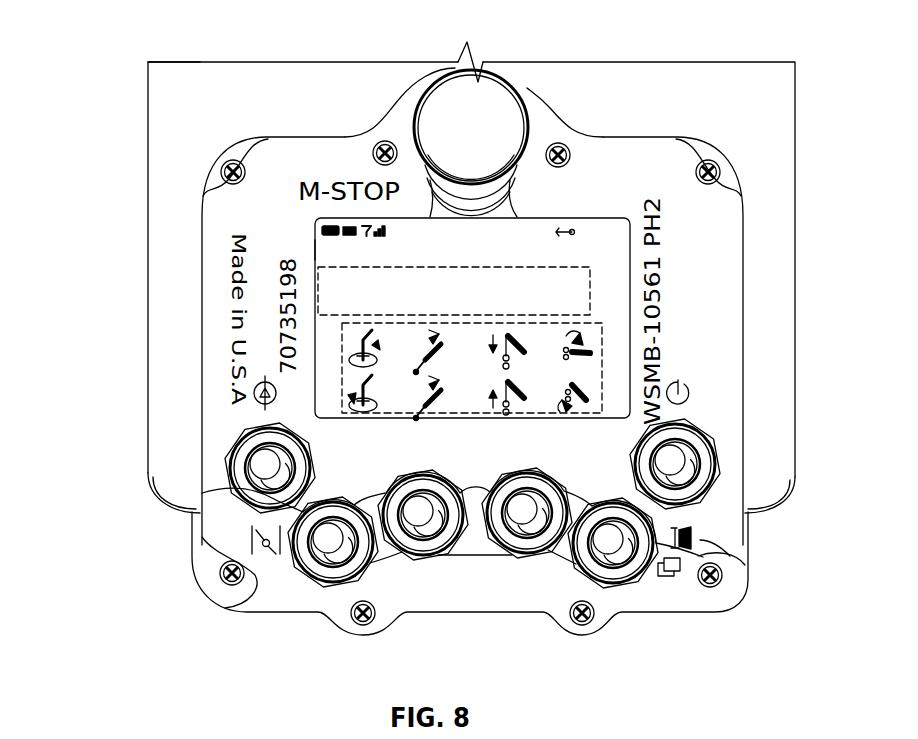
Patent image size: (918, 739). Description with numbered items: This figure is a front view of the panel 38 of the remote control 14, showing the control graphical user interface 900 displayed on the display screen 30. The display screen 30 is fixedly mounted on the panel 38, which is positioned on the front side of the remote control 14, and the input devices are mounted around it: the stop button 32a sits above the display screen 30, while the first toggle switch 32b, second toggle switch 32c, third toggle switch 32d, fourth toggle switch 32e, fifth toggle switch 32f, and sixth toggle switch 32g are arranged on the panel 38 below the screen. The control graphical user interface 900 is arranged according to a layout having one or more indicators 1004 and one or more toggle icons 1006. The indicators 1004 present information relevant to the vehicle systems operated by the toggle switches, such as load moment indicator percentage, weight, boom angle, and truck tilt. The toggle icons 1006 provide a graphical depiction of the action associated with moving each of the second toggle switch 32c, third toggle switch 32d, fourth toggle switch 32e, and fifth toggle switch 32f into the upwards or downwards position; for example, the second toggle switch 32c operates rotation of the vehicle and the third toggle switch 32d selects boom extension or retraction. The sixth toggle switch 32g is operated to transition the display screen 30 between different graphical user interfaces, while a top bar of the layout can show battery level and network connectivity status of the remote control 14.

The remote control 14 is at (170, 42).
The display screen 30 is at (570, 218).
The stop button 32a is at (533, 117).
The first toggle switch 32b is at (230, 488).
The second toggle switch 32c is at (330, 590).
The third toggle switch 32d is at (457, 557).
The fourth toggle switch 32e is at (493, 560).
The fifth toggle switch 32f is at (640, 580).
The sixth toggle switch 32g is at (745, 500).
The panel 38 is at (715, 545).
The control graphical user interface 900 is at (330, 249).
The indicators 1004 is at (483, 315).
The toggle icons 1006 is at (603, 390).